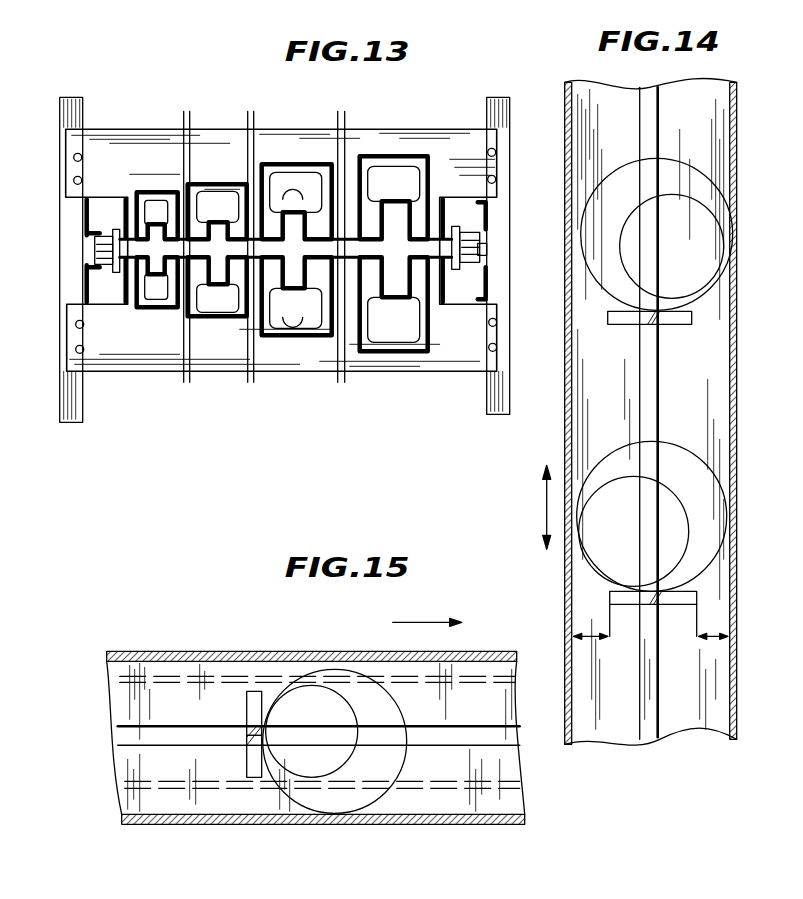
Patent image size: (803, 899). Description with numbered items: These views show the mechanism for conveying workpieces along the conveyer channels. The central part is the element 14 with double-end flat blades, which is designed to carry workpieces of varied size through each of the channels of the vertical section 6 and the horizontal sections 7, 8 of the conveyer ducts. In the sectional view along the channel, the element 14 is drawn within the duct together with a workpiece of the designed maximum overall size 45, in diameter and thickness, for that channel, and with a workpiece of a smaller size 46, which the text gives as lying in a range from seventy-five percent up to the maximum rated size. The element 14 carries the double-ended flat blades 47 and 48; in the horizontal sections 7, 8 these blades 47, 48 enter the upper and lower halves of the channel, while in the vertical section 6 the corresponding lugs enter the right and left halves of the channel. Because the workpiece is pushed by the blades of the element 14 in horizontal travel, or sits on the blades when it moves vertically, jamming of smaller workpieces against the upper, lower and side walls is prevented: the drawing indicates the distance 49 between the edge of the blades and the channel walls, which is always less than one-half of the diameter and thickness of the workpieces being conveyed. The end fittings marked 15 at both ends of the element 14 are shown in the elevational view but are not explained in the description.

In FIG. 14, the vertical section 6 is at (590, 398).
In FIG. 15, the horizontal section 7 is at (172, 694).
In FIG. 15, the horizontal section 8 is at (320, 732).
In FIG. 13, the element with double-end flat blades 14 is at (397, 225).
In FIG. 14, the element with double-end flat blades 14 is at (650, 327).
In FIG. 15, the element with double-end flat blades 14 is at (246, 724).
In FIG. 13, the bearing nut 15 is at (98, 248).
In FIG. 14, the maximum overall size 45 is at (683, 473).
In FIG. 14, the smaller size 46 is at (592, 547).
In FIG. 13, the flat blade 47 is at (377, 157).
In FIG. 14, the flat blade 47 is at (612, 600).
In FIG. 15, the flat blade 47 is at (254, 694).
In FIG. 13, the flat blade 48 is at (157, 306).
In FIG. 14, the flat blade 48 is at (678, 605).
In FIG. 15, the flat blade 48 is at (248, 777).
In FIG. 14, the distance between blade edge and channel wall 49 is at (706, 641).